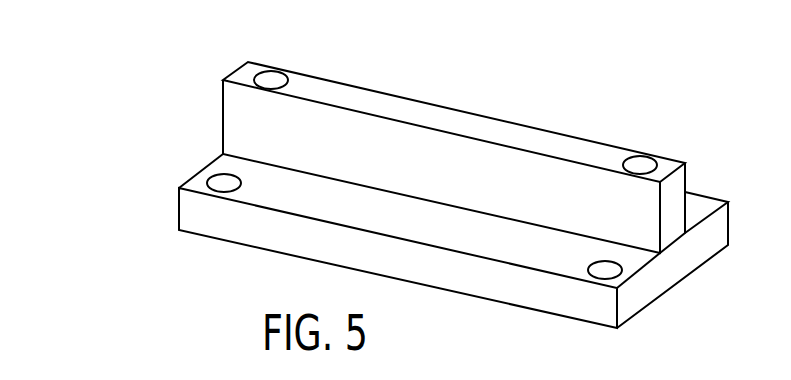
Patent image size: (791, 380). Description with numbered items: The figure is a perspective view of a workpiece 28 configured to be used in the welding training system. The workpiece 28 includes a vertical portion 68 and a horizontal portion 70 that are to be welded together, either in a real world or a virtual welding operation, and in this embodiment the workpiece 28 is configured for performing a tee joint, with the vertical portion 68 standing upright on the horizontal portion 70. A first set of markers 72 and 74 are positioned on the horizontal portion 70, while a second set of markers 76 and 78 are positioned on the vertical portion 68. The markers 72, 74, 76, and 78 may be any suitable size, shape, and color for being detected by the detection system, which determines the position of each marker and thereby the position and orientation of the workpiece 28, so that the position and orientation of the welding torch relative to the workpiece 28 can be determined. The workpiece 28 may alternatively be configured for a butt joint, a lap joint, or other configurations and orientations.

The workpiece 28 is at (130, 83).
The vertical portion 68 is at (445, 163).
The horizontal portion 70 is at (540, 245).
The marker 72 is at (221, 180).
The marker 74 is at (604, 268).
The marker 76 is at (268, 78).
The marker 78 is at (637, 160).